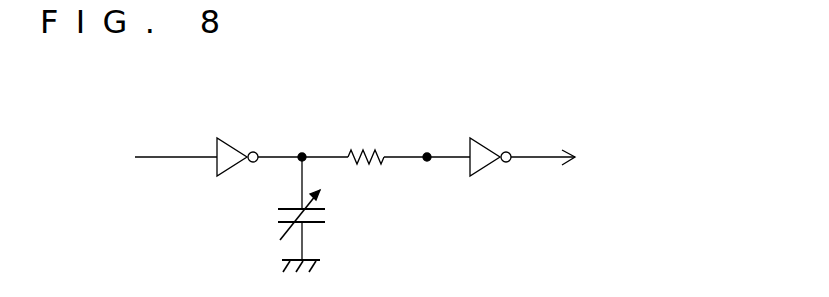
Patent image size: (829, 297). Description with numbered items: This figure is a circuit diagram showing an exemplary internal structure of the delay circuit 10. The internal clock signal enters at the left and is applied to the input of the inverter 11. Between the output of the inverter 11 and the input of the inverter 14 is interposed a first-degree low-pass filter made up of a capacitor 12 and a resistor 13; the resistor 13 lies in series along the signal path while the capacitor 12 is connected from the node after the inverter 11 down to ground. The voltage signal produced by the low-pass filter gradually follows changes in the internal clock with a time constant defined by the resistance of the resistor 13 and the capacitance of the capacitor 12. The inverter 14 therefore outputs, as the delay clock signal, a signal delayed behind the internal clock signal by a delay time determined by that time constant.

The delay circuit 10 is at (360, 193).
The inverter 11 is at (235, 145).
The capacitor 12 is at (327, 215).
The resistor 13 is at (363, 147).
The inverter 14 is at (488, 145).